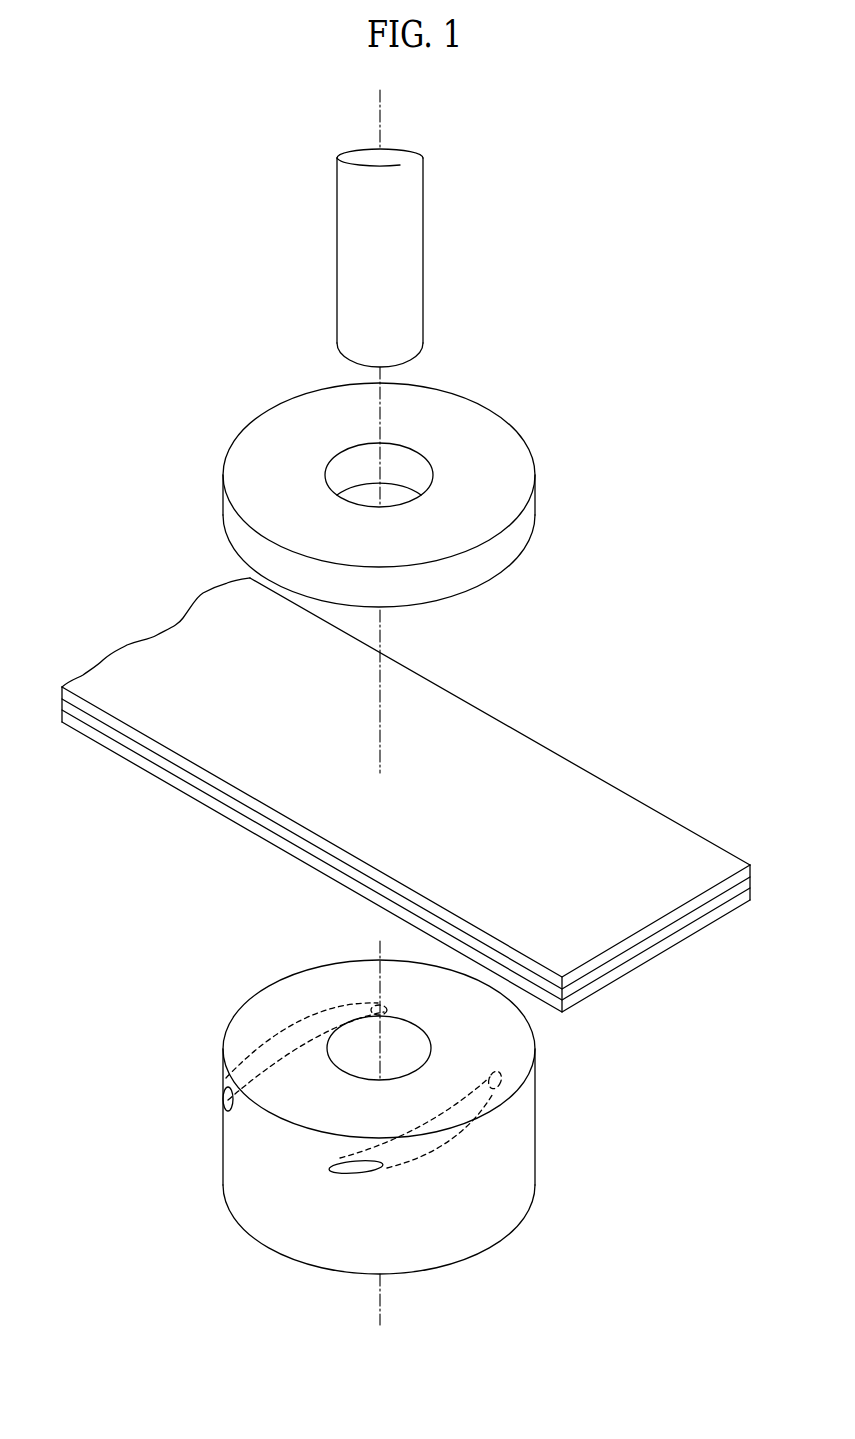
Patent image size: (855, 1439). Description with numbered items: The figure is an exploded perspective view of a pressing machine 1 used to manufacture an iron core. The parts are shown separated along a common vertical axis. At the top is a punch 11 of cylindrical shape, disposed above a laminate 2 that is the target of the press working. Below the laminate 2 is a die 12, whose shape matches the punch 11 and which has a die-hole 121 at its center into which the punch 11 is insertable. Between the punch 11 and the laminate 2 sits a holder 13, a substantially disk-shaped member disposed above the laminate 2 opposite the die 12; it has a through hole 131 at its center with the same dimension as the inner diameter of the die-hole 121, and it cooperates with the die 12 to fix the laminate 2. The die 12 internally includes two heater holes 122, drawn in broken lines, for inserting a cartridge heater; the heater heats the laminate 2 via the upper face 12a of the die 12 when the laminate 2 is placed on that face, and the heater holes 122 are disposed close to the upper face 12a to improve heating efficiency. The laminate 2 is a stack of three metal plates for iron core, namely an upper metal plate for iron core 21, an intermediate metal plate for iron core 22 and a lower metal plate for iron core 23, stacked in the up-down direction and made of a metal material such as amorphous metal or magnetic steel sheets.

The pressing machine 1 is at (617, 262).
The punch 11 is at (403, 223).
The die 12 is at (512, 1150).
The upper face 12a is at (473, 1049).
The die-hole 121 is at (352, 1057).
The heater holes 122 is at (226, 1100).
The holder 13 is at (270, 453).
The through hole 131 is at (410, 470).
The laminate 2 is at (558, 845).
The upper metal plate for iron core 21 is at (710, 894).
The intermediate metal plate for iron core 22 is at (663, 931).
The lower metal plate for iron core 23 is at (617, 971).